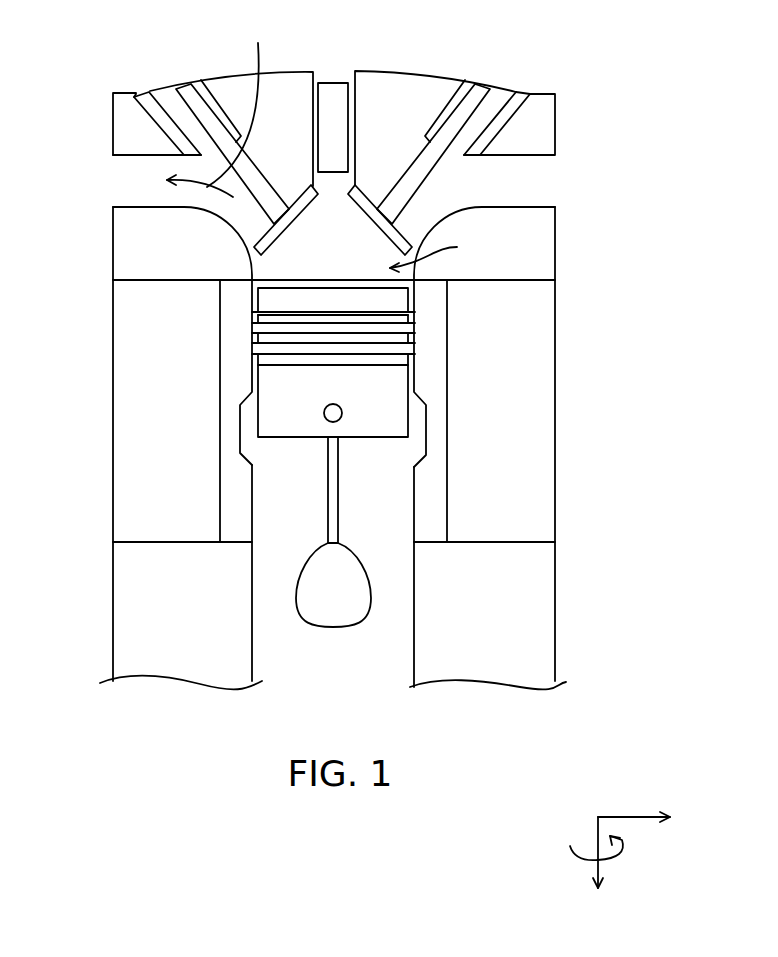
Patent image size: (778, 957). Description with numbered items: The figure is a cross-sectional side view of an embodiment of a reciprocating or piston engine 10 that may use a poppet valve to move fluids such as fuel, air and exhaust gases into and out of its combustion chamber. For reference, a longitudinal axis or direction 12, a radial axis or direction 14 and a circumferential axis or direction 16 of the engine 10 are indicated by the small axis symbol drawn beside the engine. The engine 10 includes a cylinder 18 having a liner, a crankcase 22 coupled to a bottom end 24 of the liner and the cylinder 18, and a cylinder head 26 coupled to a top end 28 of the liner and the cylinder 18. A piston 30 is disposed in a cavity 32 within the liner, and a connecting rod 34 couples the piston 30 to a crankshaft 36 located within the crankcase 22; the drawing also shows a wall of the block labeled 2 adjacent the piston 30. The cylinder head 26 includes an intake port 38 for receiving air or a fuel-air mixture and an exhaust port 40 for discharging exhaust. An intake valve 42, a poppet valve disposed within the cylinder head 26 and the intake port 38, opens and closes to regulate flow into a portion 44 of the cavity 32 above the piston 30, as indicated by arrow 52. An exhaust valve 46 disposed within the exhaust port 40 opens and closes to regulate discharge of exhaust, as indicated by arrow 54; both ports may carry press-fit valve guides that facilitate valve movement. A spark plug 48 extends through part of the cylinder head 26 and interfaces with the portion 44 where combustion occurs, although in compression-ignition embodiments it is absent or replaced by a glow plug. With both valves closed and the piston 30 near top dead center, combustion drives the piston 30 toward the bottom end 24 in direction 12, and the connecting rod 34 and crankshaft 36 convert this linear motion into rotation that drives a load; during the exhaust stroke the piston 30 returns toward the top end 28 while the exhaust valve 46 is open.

The reciprocating or piston engine 10 is at (130, 33).
The cylinder wall 2 is at (220, 502).
The longitudinal axis or direction 12 is at (598, 836).
The radial axis or direction 14 is at (630, 816).
The circumferential axis or direction 16 is at (612, 858).
The cylinder 18 is at (113, 443).
The crankcase 22 is at (113, 610).
The bottom end 24 is at (182, 542).
The cylinder head 26 is at (112, 123).
The top end 28 is at (133, 284).
The piston 30 is at (410, 421).
The cavity 32 is at (283, 495).
The connecting rod 34 is at (339, 513).
The crankshaft 36 is at (357, 557).
The intake port 38 is at (540, 183).
The exhaust port 40 is at (128, 182).
The intake valve 42 is at (376, 228).
The portion of the cavity 44 is at (319, 241).
The exhaust valve 46 is at (295, 230).
The spark plug 48 is at (333, 83).
The arrow 52 is at (438, 253).
The arrow 54 is at (240, 102).